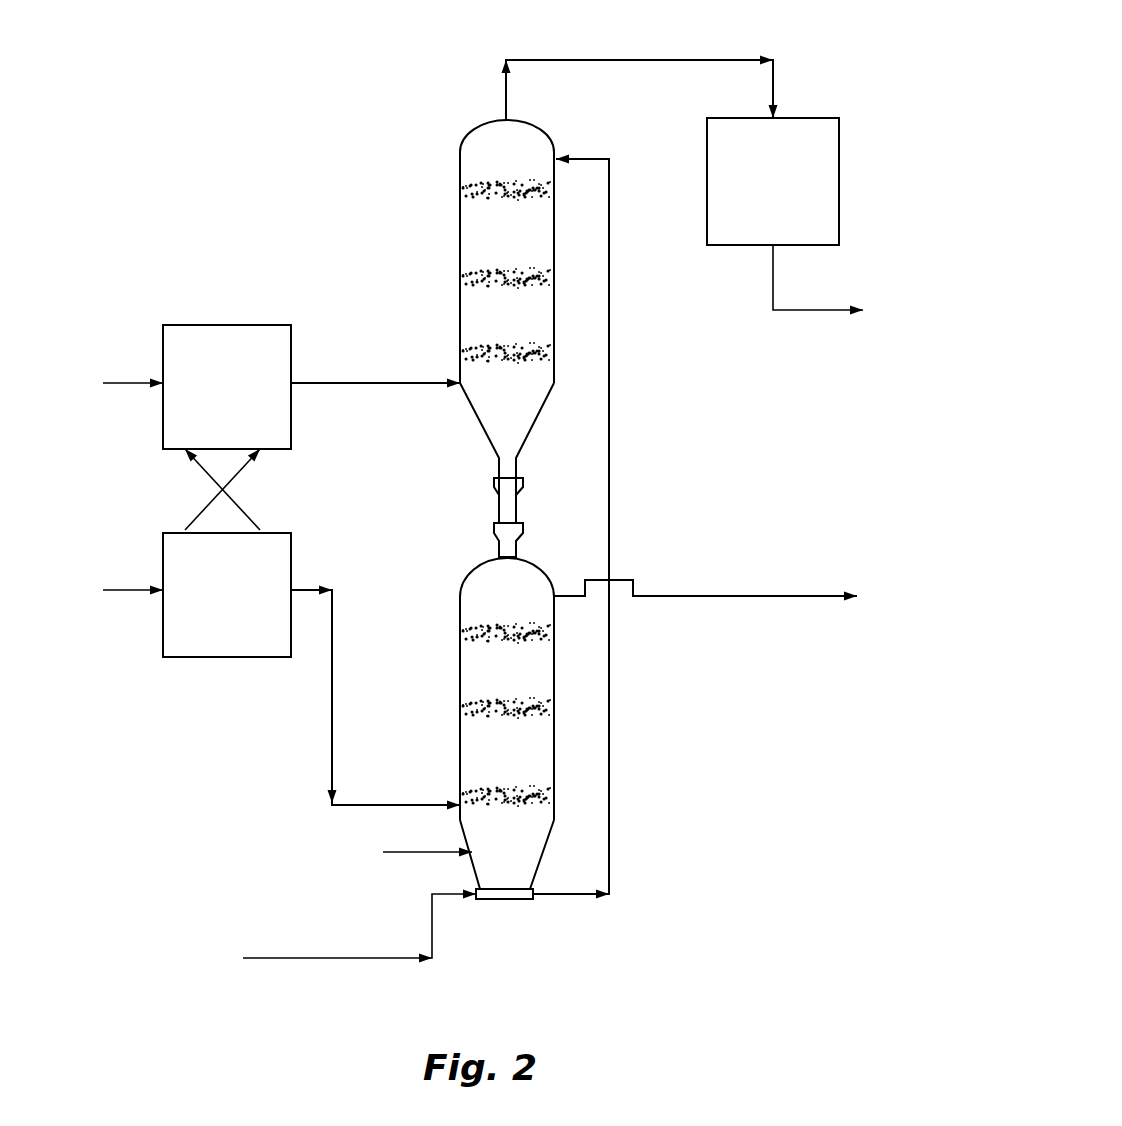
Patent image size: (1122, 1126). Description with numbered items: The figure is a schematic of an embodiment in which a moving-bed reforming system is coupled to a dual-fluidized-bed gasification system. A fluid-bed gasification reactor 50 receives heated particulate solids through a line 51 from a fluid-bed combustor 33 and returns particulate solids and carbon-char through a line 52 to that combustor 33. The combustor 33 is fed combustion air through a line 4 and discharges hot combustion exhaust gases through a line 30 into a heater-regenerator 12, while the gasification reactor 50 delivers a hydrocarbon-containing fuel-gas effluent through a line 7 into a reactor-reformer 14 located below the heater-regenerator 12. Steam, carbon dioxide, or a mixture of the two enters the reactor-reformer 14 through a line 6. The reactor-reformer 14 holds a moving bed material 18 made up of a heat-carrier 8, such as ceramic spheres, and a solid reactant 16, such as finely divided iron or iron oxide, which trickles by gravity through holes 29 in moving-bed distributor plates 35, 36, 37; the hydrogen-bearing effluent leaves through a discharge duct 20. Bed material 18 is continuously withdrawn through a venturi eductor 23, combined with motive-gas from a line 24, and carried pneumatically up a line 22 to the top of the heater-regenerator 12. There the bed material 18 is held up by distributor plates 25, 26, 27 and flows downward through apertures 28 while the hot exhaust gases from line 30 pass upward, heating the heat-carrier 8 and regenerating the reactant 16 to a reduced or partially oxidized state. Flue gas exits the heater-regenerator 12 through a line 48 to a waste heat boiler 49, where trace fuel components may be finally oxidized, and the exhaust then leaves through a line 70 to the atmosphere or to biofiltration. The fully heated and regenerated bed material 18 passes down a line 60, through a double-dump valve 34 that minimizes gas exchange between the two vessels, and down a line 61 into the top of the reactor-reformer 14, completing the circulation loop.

The line 4 is at (130, 378).
The line 6 is at (395, 853).
The line 7 is at (345, 807).
The heat-carrier 8 is at (525, 405).
The heater-regenerator 12 is at (470, 136).
The reactor-reformer 14 is at (465, 582).
The solid reactant 16 is at (550, 350).
The moving bed material 18 is at (507, 347).
The discharge duct 20 is at (743, 597).
The line 22 is at (609, 427).
The venturi eductor 23 is at (505, 900).
The line 24 is at (318, 960).
The moving-bed distributor plate 25 is at (460, 192).
The moving-bed distributor plate 26 is at (460, 280).
The moving-bed distributor plate 27 is at (460, 355).
The apertures 28 is at (508, 197).
The holes 29 is at (510, 641).
The line 30 is at (362, 383).
The fluid-bed combustor 33 is at (222, 320).
The double-dump valve 34 is at (492, 512).
The moving-bed distributor plate 35 is at (460, 633).
The moving-bed distributor plate 36 is at (460, 708).
The moving-bed distributor plate 37 is at (460, 797).
The line 48 is at (612, 60).
The waste heat boiler 49 is at (803, 113).
The fluid-bed gasification reactor 50 is at (215, 657).
The line 51 is at (200, 476).
The line 52 is at (245, 477).
The line 60 is at (518, 472).
The line 61 is at (518, 550).
The line 70 is at (812, 312).